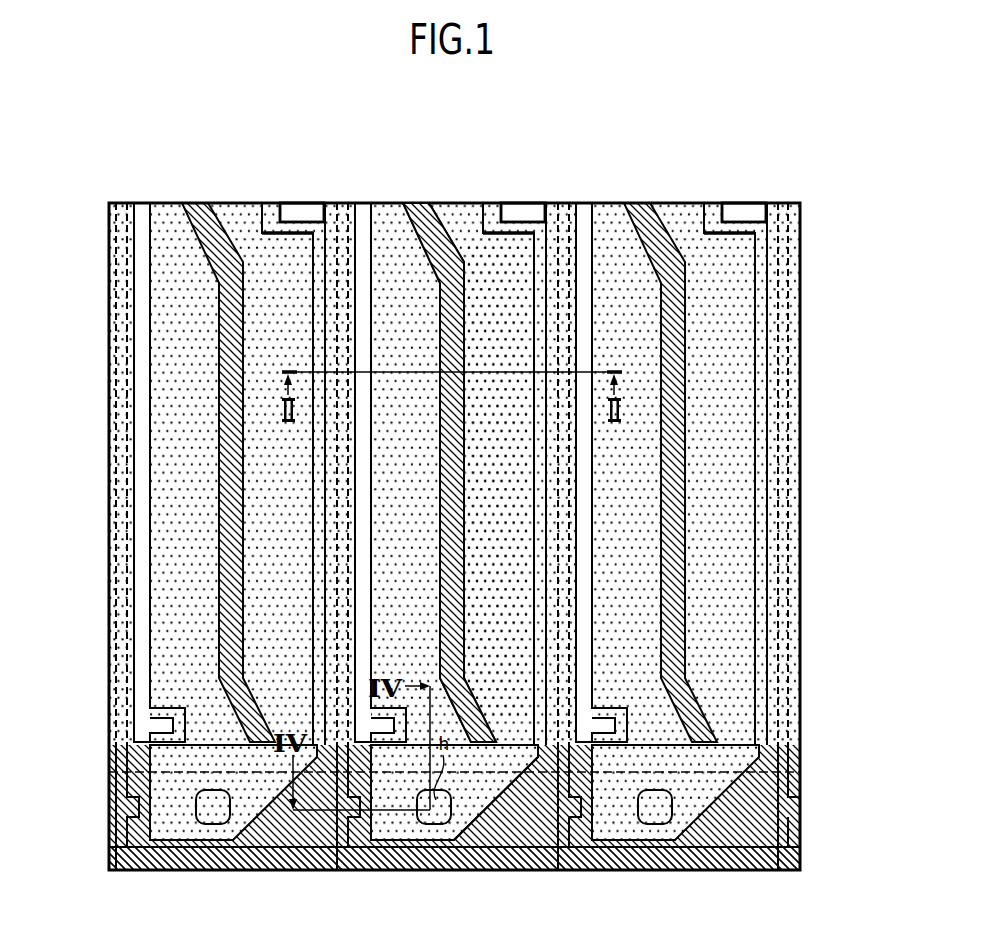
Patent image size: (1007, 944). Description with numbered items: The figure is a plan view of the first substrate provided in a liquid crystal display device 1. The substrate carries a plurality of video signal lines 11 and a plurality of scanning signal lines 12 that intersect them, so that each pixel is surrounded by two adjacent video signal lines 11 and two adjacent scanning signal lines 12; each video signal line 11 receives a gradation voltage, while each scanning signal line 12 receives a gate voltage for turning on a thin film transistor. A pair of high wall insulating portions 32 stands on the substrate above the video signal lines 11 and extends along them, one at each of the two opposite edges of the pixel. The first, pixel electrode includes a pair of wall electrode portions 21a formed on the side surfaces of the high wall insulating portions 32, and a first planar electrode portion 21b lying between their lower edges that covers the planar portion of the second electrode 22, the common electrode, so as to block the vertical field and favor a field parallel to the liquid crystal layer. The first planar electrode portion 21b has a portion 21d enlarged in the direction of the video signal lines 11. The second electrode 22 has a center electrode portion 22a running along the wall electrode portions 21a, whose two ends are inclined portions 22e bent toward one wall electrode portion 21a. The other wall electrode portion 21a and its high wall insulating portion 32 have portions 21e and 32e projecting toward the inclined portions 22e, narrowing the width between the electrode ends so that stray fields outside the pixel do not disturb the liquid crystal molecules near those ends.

The liquid crystal display device 1 is at (454, 505).
The video signal line 11 is at (335, 285).
The scanning signal line 12 is at (172, 847).
The wall electrode portion 21a is at (365, 498).
The first planar electrode portion 21b is at (497, 352).
The enlarged portion of first planar electrode portion 21d is at (495, 787).
The projected portion of wall electrode portion 21e is at (490, 214).
The second electrode 22 is at (670, 860).
The center electrode portion 22a is at (453, 453).
The inclined portion 22e is at (433, 233).
The high wall insulating portion 32 is at (333, 312).
The projected portion of high wall insulating portion 32e is at (383, 728).